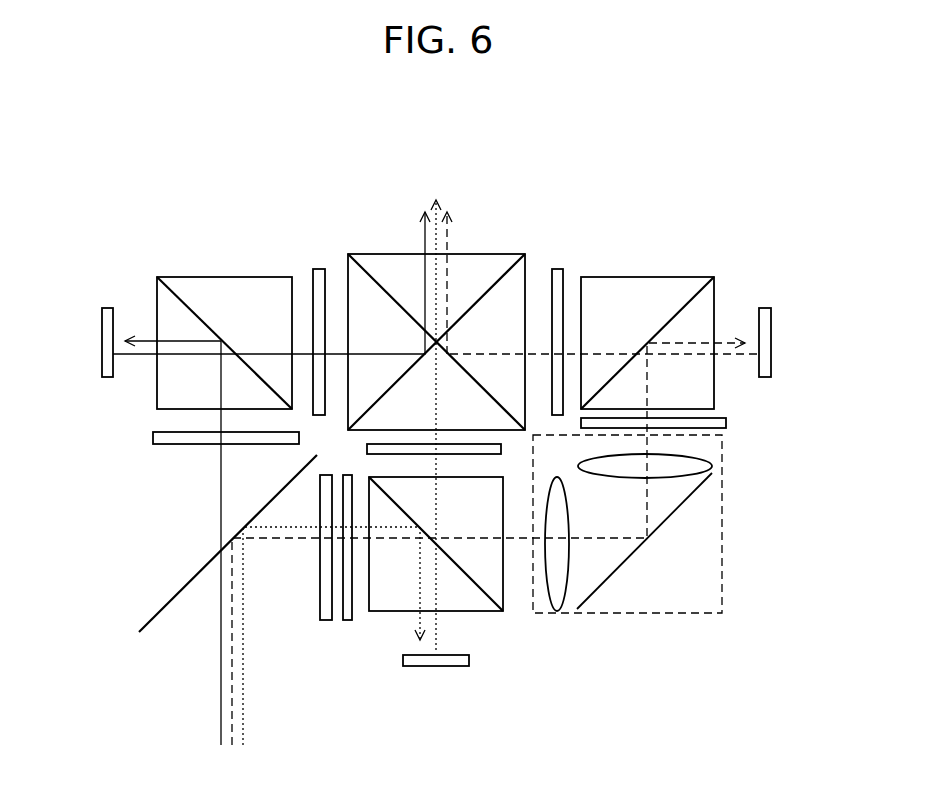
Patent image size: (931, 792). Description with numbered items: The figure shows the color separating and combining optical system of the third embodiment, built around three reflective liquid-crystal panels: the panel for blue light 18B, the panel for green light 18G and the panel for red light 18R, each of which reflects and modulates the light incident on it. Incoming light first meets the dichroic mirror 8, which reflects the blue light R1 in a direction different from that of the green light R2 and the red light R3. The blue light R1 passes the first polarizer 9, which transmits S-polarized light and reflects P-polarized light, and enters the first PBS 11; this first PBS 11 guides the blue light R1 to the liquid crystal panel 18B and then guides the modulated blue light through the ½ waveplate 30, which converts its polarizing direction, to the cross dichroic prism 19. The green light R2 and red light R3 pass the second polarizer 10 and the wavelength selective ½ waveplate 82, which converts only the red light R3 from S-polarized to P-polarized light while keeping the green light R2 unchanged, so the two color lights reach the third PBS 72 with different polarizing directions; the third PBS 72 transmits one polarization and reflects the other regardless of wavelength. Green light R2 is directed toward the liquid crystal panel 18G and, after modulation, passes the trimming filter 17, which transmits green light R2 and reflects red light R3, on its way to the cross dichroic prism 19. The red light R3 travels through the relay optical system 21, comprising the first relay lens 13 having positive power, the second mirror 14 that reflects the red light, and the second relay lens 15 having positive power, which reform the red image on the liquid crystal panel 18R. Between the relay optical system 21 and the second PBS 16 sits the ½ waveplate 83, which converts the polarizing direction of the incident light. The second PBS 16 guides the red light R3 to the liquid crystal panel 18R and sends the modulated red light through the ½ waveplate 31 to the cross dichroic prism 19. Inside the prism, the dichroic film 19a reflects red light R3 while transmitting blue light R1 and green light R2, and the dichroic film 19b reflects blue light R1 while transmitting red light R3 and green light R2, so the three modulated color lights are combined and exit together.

The dichroic mirror 8 is at (152, 619).
The first polarizer 9 is at (155, 438).
The second polarizer 10 is at (325, 582).
The first PBS 11 is at (213, 277).
The first relay lens 13 is at (555, 595).
The second mirror 14 is at (618, 568).
The second relay lens 15 is at (697, 463).
The second PBS 16 is at (622, 287).
The trimming filter 17 is at (368, 450).
The reflective liquid-crystal panel for blue light 18B is at (102, 354).
The reflective liquid-crystal panel for green light 18G is at (453, 667).
The reflective liquid-crystal panel for red light 18R is at (771, 352).
The cross dichroic prism 19 is at (439, 307).
The dichroic film 19a is at (367, 262).
The dichroic film 19b is at (485, 285).
The relay optical system 21 is at (663, 553).
The ½ waveplate 30 is at (318, 269).
The ½ waveplate 31 is at (558, 269).
The third PBS 72 is at (475, 600).
The wavelength selective ½ waveplate 82 is at (347, 622).
The ½ waveplate 83 is at (727, 421).
The blue light R1 is at (221, 621).
The green light R2 is at (243, 677).
The red light R3 is at (232, 667).